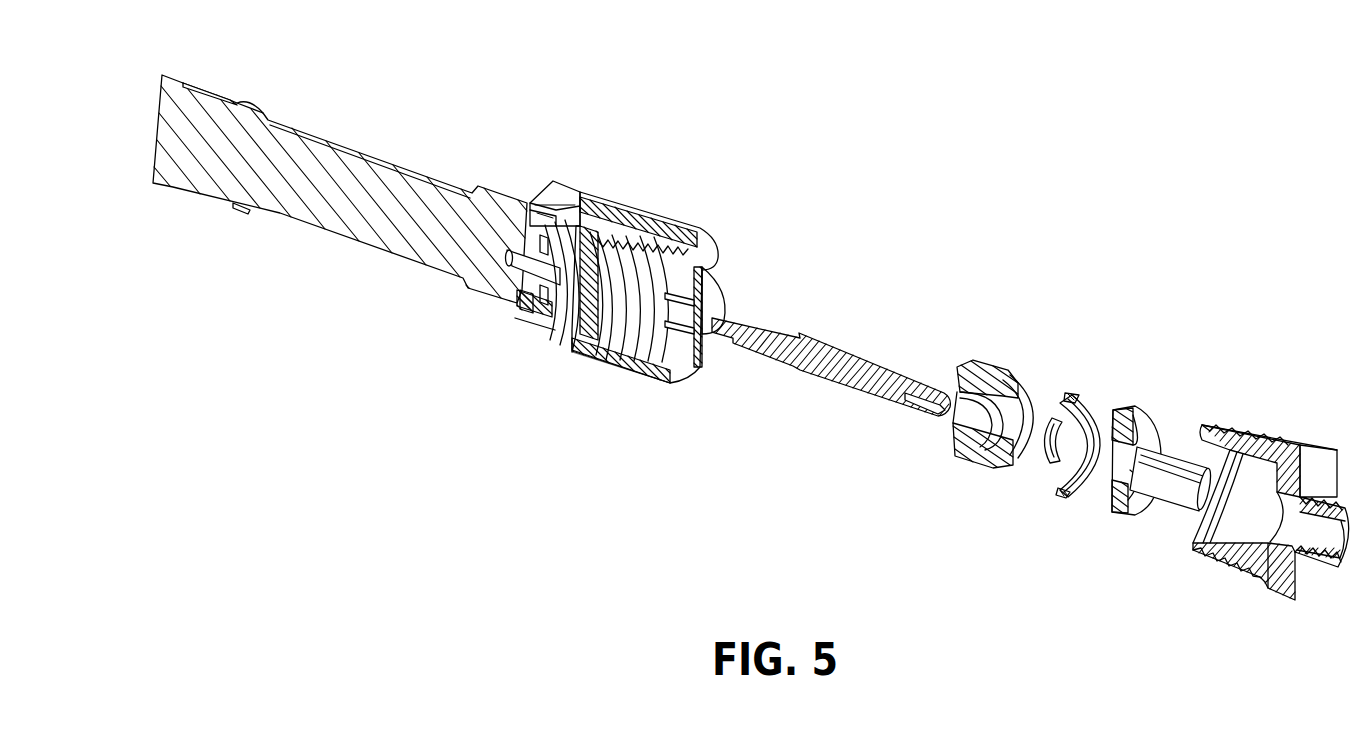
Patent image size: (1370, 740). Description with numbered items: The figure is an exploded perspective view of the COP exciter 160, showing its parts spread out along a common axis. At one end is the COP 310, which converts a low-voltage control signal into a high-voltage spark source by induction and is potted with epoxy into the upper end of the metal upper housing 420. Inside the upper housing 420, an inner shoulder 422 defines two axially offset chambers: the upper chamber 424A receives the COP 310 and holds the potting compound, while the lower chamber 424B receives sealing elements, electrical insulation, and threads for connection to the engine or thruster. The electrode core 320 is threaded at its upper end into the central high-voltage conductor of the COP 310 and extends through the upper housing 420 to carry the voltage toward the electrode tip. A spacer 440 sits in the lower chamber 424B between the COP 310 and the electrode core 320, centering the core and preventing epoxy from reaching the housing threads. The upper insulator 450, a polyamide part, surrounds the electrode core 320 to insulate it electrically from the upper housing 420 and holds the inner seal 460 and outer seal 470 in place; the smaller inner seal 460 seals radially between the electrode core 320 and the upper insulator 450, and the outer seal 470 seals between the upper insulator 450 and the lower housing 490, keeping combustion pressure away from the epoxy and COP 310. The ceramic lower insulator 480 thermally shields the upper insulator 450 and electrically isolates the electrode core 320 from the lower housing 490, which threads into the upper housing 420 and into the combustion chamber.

The COP exciter 160 is at (538, 60).
The COP 310 is at (216, 93).
The electrode core 320 is at (867, 368).
The upper housing 420 is at (565, 190).
The inner shoulder 422 is at (629, 296).
The upper chamber 424A is at (553, 330).
The lower chamber 424B is at (665, 390).
The spacer 440 is at (723, 270).
The upper insulator 450 is at (995, 360).
The inner seal 460 is at (1050, 463).
The outer seal 470 is at (1080, 395).
The lower insulator 480 is at (1140, 412).
The lower housing 490 is at (1296, 442).